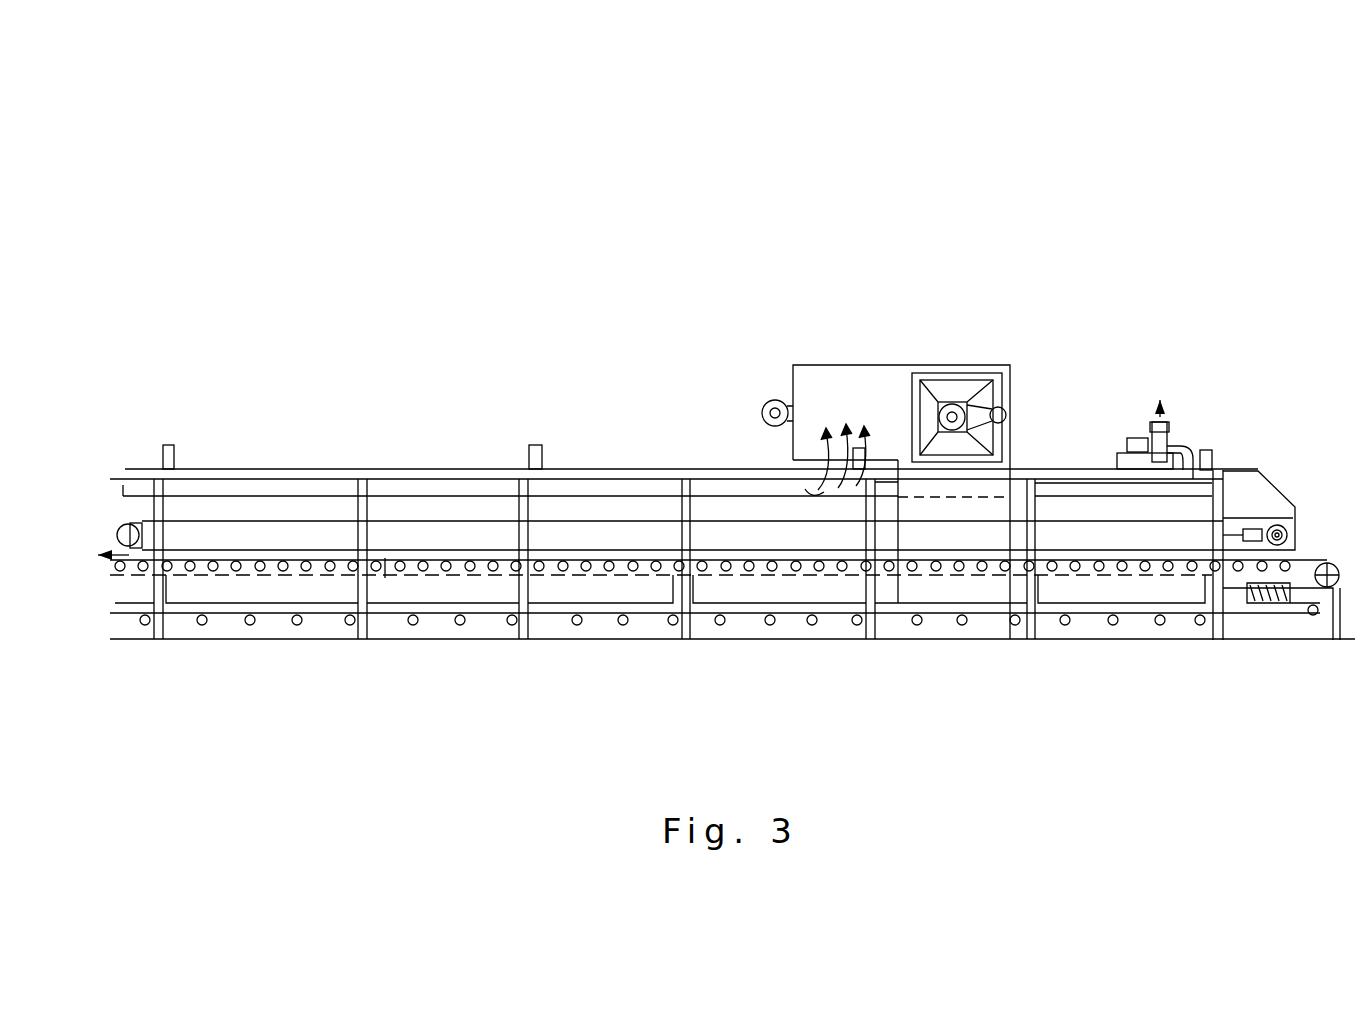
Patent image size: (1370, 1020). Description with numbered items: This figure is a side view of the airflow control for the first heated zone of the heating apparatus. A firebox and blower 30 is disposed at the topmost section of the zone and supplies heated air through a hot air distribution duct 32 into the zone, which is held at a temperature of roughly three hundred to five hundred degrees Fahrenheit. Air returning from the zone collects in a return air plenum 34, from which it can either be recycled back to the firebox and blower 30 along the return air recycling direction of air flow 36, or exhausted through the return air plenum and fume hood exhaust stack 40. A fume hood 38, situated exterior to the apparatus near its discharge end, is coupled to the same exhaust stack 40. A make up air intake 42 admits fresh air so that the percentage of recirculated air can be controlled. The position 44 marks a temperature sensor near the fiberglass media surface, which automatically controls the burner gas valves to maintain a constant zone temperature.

The firebox and blower 30 is at (938, 370).
The hot air distribution duct 32 is at (1062, 593).
The return air plenum 34 is at (738, 487).
The return air recycling direction of air flow 36 is at (848, 410).
The fume hood 38 is at (1229, 467).
The return air plenum and fume hood exhaust stack 40 is at (1148, 422).
The make up air intake 42 is at (773, 397).
The position of a temperature sensor 44 is at (1053, 532).